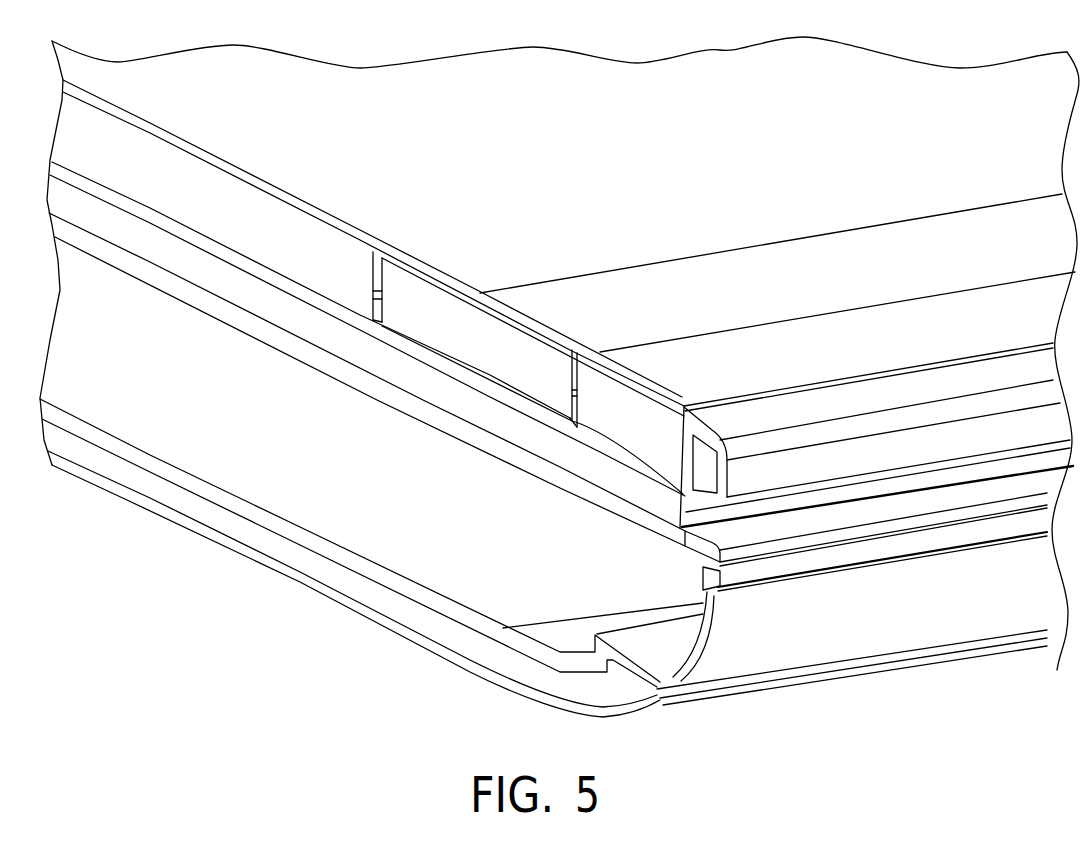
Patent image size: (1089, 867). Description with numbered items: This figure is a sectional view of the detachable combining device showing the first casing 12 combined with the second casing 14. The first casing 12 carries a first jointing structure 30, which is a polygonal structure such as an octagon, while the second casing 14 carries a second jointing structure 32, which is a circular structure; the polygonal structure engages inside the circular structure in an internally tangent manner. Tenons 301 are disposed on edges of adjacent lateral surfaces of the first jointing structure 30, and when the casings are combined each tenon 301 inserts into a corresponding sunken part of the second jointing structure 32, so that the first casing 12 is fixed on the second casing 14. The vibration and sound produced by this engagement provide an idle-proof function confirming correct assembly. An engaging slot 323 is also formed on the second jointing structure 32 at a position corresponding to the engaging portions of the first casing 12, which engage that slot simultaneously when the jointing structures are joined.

The first casing 12 is at (453, 279).
The second casing 14 is at (563, 423).
The first jointing structure 30 is at (412, 316).
The tenon 301 is at (573, 392).
The second jointing structure 32 is at (470, 380).
The engaging slot 323 is at (577, 397).